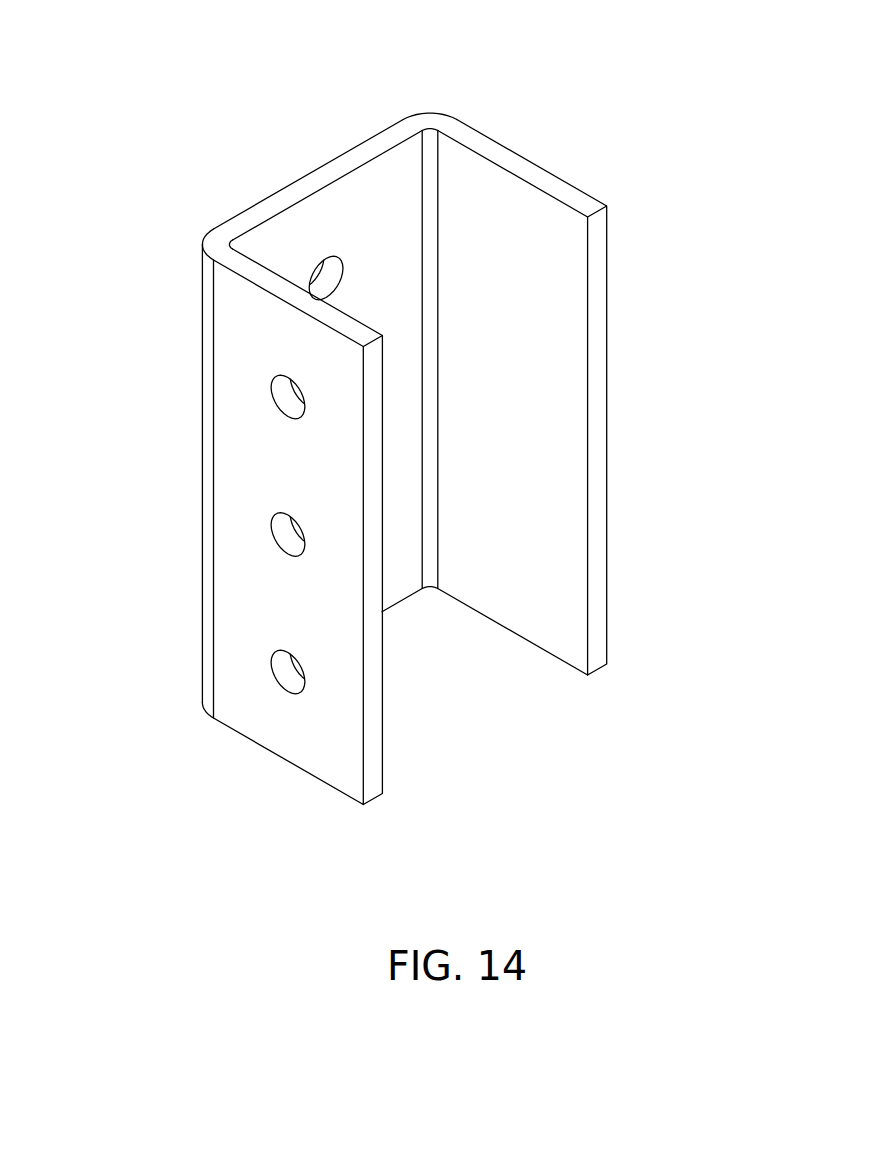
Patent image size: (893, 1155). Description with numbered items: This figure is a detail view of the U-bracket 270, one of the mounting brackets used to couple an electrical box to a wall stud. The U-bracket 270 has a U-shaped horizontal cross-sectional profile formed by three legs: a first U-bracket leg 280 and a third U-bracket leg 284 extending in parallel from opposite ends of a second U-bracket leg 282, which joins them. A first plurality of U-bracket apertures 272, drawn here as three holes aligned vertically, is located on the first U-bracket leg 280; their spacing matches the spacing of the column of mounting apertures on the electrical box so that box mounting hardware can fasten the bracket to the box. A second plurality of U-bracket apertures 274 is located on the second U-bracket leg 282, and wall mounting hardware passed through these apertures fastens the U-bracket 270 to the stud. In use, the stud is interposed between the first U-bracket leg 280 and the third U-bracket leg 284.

The U-bracket 270 is at (397, 452).
The first plurality of U-bracket apertures 272 is at (273, 660).
The second plurality of U-bracket apertures 274 is at (313, 273).
The first U-bracket leg 280 is at (211, 555).
The second U-bracket leg 282 is at (316, 317).
The third U-bracket leg 284 is at (532, 361).